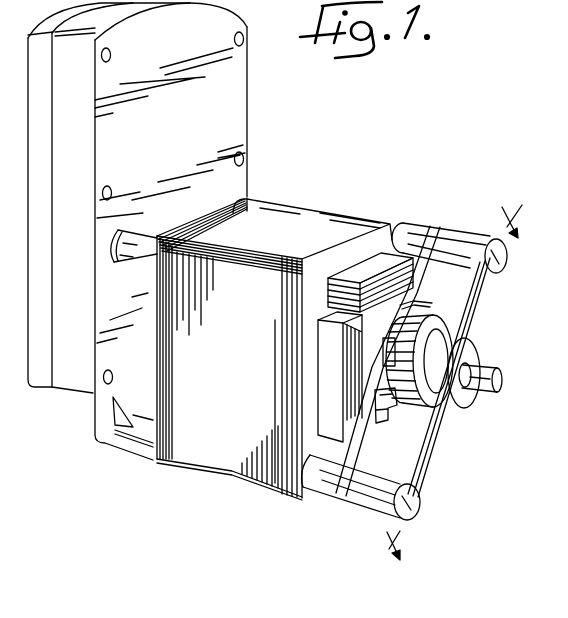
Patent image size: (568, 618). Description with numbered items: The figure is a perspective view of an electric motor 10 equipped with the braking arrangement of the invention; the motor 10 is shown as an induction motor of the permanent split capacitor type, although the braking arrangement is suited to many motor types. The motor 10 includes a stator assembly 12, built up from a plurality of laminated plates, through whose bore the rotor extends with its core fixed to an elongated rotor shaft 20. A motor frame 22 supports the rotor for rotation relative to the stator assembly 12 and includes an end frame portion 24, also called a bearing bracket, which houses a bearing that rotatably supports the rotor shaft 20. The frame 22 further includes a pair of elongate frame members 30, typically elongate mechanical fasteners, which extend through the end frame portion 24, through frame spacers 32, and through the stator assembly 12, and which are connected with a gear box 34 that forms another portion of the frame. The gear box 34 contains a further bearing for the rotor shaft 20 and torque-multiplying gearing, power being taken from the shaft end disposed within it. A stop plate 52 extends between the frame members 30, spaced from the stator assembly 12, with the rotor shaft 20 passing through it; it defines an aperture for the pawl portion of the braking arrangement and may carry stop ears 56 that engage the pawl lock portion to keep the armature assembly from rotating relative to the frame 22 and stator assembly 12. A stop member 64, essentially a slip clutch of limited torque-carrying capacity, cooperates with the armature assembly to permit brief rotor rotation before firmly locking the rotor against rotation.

The electric motor 10 is at (338, 166).
The stator assembly 12 is at (236, 387).
The rotor shaft 20 is at (483, 392).
The motor frame 22 is at (330, 508).
The end frame portion 24 is at (424, 451).
The frame members 30 is at (502, 259).
The frame spacers 32 is at (411, 231).
The gear box 34 is at (230, 100).
The stop plate 52 is at (419, 292).
The stop ears 56 is at (387, 403).
The stop member 64 is at (442, 308).